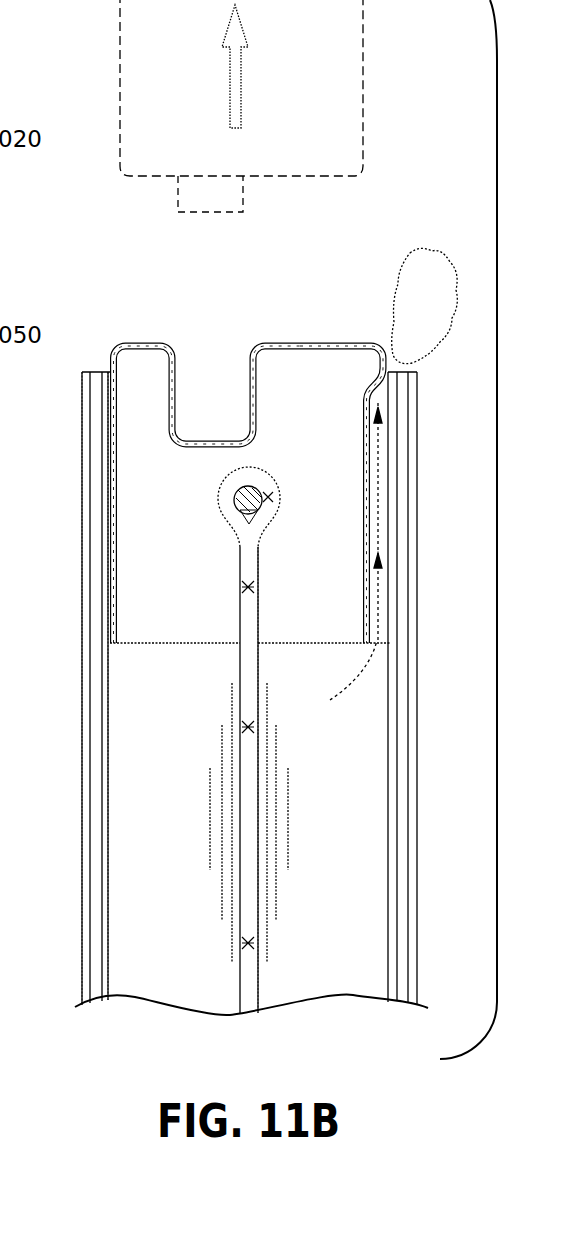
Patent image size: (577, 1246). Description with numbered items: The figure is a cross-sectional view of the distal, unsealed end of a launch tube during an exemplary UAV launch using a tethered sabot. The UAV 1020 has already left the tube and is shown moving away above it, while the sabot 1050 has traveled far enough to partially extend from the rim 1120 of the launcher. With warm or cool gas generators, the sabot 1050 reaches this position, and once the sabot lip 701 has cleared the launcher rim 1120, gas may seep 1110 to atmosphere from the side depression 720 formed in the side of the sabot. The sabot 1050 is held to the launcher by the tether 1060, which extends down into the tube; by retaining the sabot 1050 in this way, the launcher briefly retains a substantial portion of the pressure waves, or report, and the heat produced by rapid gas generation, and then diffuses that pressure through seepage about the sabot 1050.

The UAV 1020 is at (126, 89).
The tethered sabot 1050 is at (155, 342).
The sabot lip 701 is at (358, 342).
The launcher rim 1120 is at (97, 368).
The side depression 720 is at (386, 394).
The gas seepage 1110 is at (440, 266).
The tether 1060 is at (265, 617).